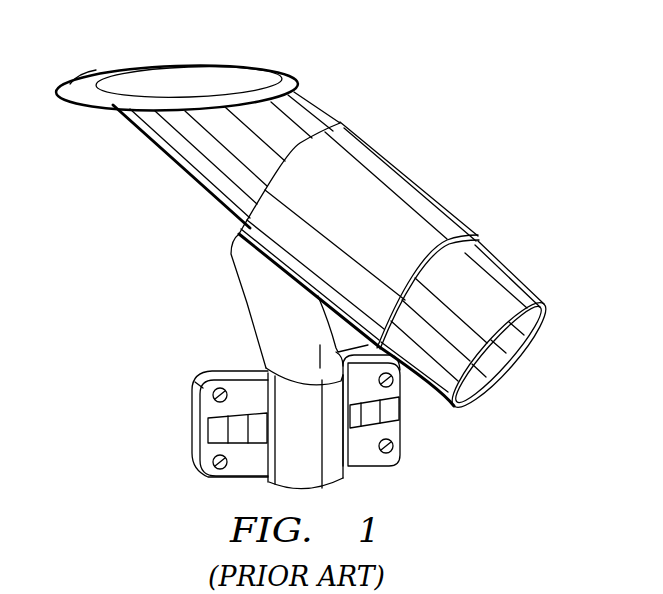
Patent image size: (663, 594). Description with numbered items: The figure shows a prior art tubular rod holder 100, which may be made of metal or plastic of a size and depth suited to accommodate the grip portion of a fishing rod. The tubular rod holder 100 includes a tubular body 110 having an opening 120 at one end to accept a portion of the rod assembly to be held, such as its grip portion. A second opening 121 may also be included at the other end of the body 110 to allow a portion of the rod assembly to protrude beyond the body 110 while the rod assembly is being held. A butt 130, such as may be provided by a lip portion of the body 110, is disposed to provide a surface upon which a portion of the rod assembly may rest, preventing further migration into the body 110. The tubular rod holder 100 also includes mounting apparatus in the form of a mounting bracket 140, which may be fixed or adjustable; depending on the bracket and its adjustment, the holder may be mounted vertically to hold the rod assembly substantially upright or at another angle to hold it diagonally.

The tubular rod holder 100 is at (447, 146).
The tubular body 110 is at (186, 162).
The opening 120 is at (157, 78).
The opening 121 is at (494, 371).
The butt 130 is at (286, 84).
The mounting bracket 140 is at (195, 427).